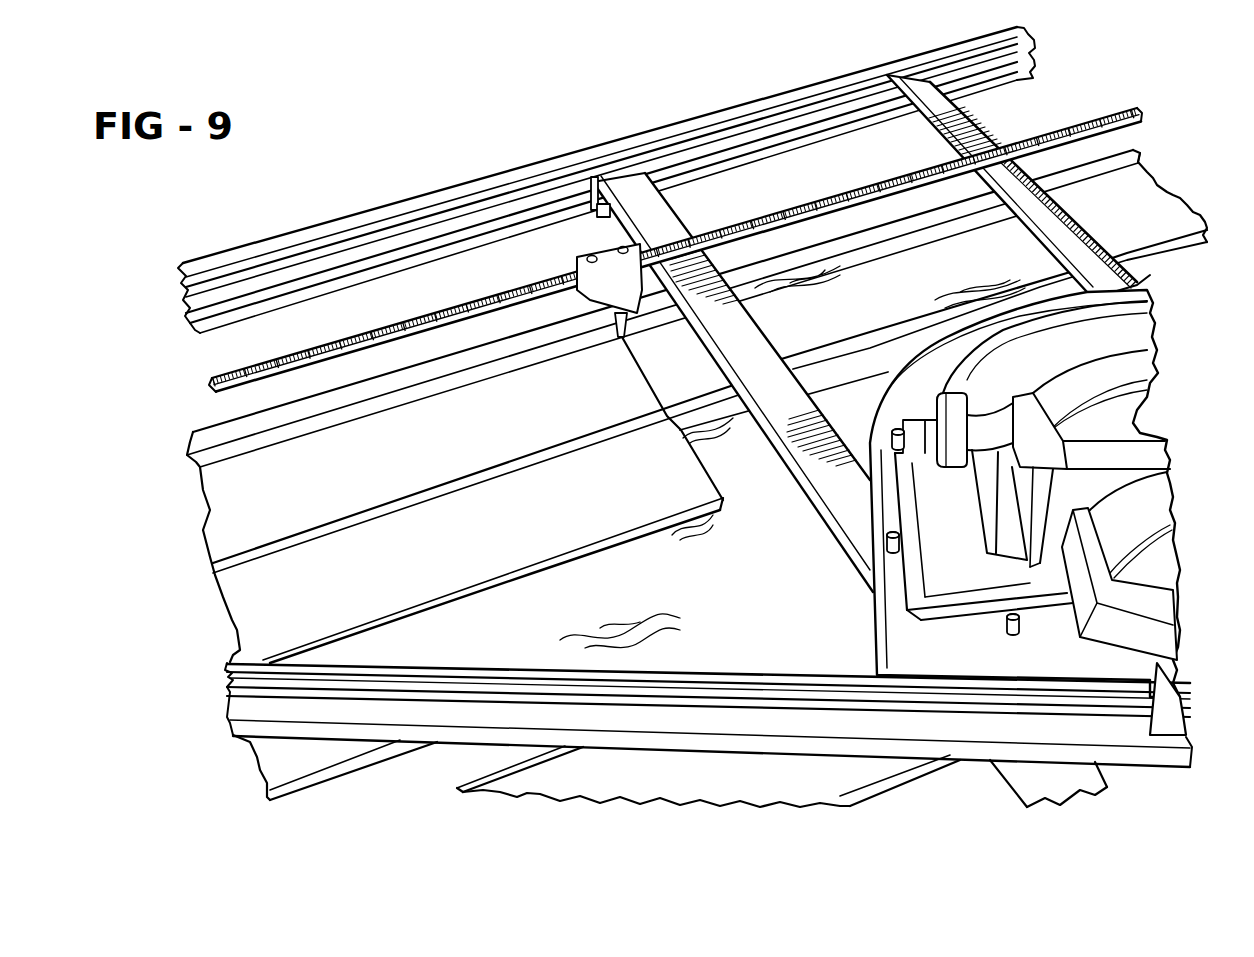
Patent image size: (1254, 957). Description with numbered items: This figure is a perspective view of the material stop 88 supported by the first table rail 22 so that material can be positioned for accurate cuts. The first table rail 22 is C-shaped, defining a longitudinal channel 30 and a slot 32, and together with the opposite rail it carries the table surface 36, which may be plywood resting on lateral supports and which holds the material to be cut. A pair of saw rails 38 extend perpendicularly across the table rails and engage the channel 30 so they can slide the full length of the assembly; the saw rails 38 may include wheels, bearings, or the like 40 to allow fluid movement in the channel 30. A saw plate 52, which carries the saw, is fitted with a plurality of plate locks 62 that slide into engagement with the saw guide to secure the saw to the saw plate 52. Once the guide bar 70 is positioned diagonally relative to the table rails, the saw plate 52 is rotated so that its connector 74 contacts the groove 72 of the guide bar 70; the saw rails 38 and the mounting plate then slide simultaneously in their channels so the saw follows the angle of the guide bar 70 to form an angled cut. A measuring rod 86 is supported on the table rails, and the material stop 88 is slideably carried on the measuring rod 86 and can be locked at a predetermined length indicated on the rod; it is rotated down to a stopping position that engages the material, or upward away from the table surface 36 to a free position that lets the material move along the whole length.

The first table rail 22 is at (445, 190).
The channel 30 is at (520, 203).
The slot 32 is at (350, 232).
The table surface 36 is at (624, 596).
The saw rail 38 is at (632, 190).
The wheels, bearings, or the like 40 is at (592, 192).
The saw plate 52 is at (892, 660).
The plate locks 62 is at (891, 440).
The guide bar 70 is at (887, 728).
The groove 72 is at (800, 703).
The connector 74 is at (1178, 697).
The measuring rod 86 is at (453, 308).
The material stop 88 is at (605, 287).